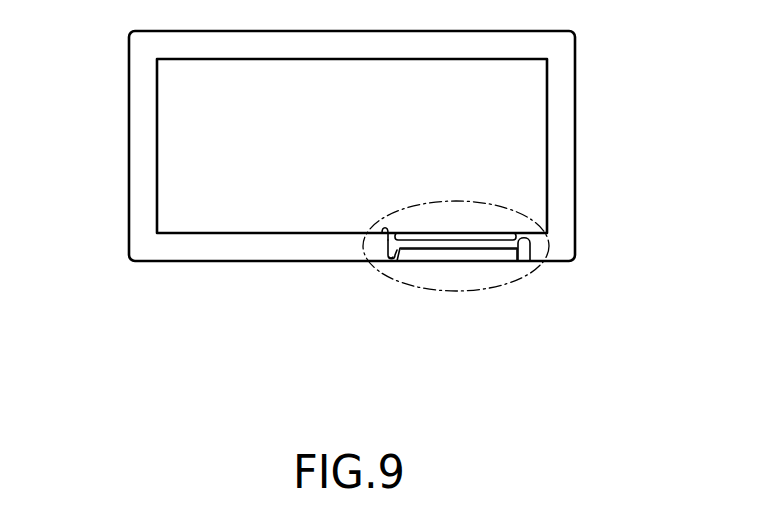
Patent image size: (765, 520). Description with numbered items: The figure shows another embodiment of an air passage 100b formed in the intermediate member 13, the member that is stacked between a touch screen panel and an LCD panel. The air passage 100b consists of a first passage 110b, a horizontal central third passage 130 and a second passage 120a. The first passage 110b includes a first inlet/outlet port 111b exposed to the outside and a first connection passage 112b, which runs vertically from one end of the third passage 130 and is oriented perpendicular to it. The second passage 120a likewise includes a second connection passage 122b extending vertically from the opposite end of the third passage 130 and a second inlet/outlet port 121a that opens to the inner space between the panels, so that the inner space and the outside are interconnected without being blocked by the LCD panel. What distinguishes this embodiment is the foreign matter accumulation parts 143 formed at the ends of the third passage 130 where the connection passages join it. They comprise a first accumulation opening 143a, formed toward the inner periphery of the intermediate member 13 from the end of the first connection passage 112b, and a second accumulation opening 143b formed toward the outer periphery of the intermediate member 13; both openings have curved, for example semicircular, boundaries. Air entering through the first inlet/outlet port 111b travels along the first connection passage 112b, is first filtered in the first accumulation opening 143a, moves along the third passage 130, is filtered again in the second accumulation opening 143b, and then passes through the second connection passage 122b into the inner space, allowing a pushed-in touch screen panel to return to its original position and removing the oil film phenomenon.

The intermediate member 13 is at (115, 85).
The air passage 100b is at (507, 203).
The first passage 110b is at (550, 265).
The first connection passage 112b is at (519, 238).
The first inlet/outlet port 111b is at (520, 262).
The third passage 130 is at (459, 249).
The second passage 120a is at (310, 287).
The second inlet/outlet port 121a is at (384, 232).
The second connection passage 122b is at (391, 262).
The foreign matter accumulation parts 143 is at (468, 332).
The first accumulation opening 143a is at (524, 260).
The second accumulation opening 143b is at (399, 259).